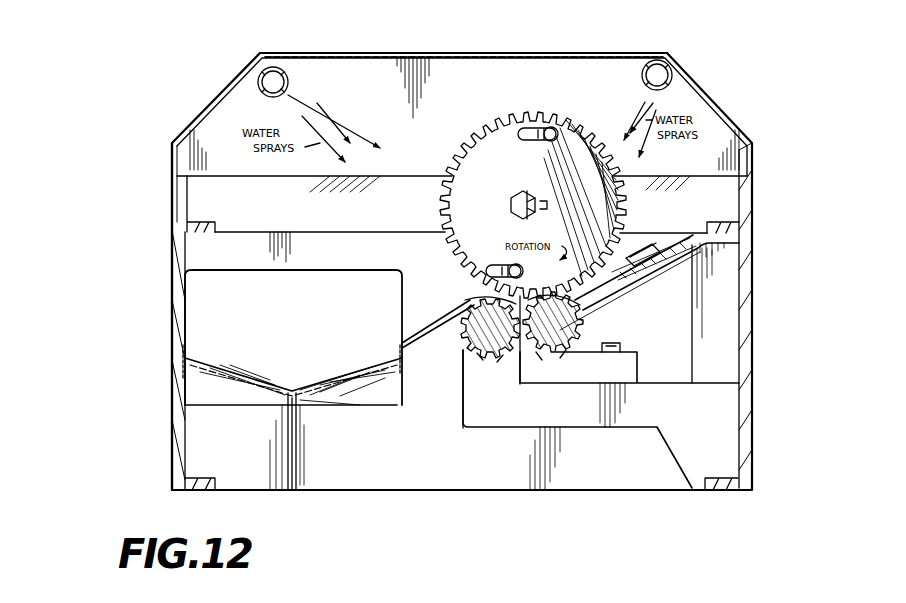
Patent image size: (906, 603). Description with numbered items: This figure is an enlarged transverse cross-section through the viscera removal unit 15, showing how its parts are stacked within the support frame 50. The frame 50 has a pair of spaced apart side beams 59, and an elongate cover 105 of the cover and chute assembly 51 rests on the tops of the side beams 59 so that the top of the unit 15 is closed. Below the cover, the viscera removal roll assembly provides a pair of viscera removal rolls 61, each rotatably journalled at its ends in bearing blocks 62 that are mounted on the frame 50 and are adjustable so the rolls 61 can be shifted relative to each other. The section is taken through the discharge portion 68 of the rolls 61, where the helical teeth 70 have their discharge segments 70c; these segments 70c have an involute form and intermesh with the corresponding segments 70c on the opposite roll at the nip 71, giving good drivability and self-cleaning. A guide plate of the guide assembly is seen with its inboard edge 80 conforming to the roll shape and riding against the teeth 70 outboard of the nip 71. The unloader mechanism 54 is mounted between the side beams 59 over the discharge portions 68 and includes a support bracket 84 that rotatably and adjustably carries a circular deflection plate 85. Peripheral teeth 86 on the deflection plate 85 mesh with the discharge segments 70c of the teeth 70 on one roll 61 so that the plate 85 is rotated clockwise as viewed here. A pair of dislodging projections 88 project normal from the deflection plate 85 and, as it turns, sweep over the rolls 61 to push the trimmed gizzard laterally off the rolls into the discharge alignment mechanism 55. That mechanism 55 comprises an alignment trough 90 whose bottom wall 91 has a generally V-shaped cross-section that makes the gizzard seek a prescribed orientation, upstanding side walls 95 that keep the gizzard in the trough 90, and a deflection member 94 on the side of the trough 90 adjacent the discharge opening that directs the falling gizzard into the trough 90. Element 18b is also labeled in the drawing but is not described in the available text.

The viscera removal unit 15 is at (148, 472).
The support frame 50 is at (170, 411).
The cover and chute assembly 51 is at (426, 50).
The unloader mechanism 54 is at (546, 106).
The discharge alignment mechanism 55 is at (288, 409).
The side beams 59 is at (180, 368).
The viscera removal rolls 61 is at (470, 360).
The bearing blocks 62 is at (640, 360).
The discharge portion 68 is at (462, 350).
The teeth 70 is at (461, 334).
The discharge segments 70c is at (480, 360).
The nip 71 is at (524, 292).
The inboard edge 80 is at (570, 300).
The support bracket 84 is at (386, 182).
The deflection plate 85 is at (580, 226).
The teeth 86 is at (628, 196).
The dislodging projections 88 is at (532, 140).
The alignment trough 90 is at (352, 404).
The bottom wall 91 is at (370, 400).
The deflection member 94 is at (446, 310).
The side walls 95 is at (188, 345).
The cover 105 is at (590, 52).
The discharge ramp 18b is at (624, 286).